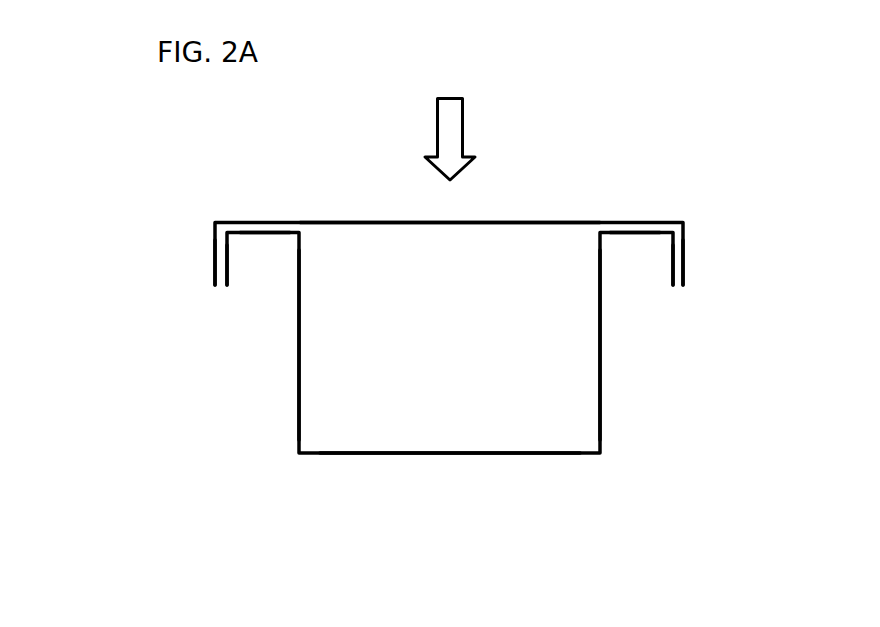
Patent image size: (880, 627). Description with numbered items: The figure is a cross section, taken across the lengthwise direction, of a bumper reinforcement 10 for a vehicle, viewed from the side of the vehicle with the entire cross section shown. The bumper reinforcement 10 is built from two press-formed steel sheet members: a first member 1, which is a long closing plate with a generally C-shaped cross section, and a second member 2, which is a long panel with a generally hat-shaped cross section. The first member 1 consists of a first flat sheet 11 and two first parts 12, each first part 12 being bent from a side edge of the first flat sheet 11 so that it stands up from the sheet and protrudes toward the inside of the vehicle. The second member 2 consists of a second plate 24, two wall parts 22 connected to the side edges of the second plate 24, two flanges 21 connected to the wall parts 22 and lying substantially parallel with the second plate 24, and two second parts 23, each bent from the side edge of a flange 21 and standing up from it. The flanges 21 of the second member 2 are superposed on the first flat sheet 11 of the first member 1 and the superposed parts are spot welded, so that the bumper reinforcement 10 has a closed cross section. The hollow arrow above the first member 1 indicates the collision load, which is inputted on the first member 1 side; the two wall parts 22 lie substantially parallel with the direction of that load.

The bumper reinforcement 10 is at (295, 178).
The first member 1 is at (537, 218).
The first flat sheet 11 is at (366, 221).
The first part 12 is at (213, 250).
The second member 2 is at (536, 456).
The flange 21 is at (273, 234).
The wall part 22 is at (297, 403).
The second part 23 is at (229, 265).
The second plate 24 is at (363, 456).